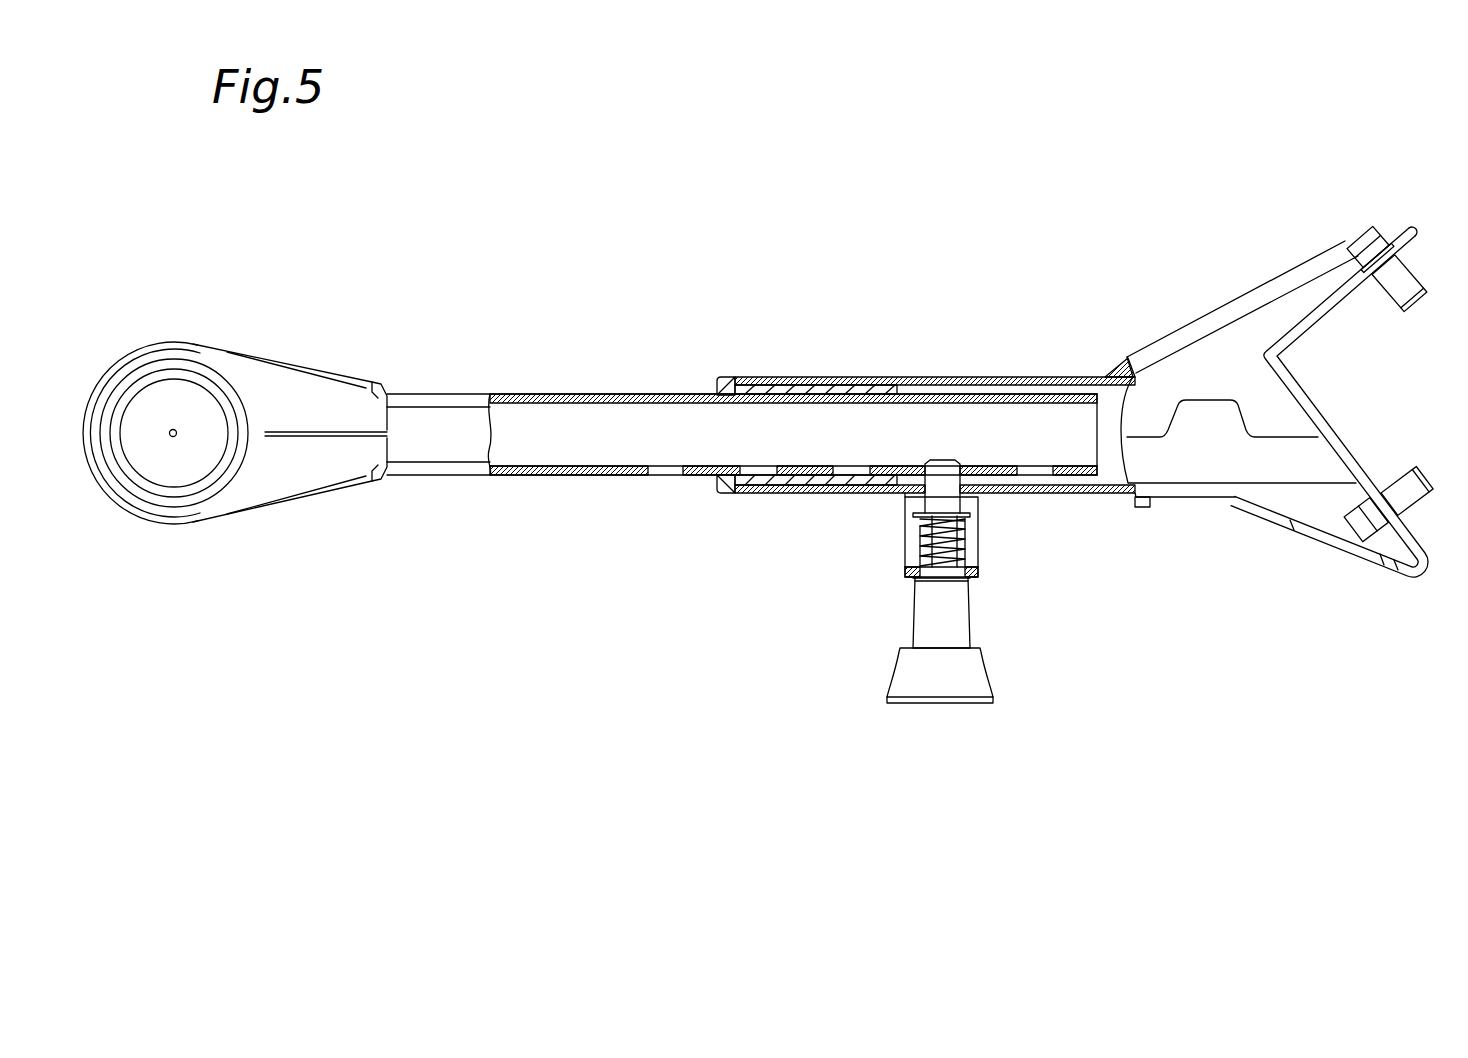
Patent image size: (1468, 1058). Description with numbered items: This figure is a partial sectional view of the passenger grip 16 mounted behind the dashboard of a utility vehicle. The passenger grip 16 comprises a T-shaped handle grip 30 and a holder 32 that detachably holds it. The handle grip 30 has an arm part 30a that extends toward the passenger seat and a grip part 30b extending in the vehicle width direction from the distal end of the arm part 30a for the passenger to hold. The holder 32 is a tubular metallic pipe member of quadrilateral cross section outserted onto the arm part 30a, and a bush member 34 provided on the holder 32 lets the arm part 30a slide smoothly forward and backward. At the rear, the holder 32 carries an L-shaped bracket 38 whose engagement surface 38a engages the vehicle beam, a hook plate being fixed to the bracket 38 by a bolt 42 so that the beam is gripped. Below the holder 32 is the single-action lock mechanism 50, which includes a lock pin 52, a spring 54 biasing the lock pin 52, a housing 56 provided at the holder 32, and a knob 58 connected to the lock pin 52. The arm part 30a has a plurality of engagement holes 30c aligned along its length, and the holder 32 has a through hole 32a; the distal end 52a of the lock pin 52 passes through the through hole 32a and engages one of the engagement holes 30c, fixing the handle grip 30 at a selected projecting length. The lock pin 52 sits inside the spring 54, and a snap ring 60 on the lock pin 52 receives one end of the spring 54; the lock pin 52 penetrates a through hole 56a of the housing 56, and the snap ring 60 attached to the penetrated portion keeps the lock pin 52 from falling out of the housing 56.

The passenger grip 16 is at (580, 200).
The handle grip 30 is at (225, 352).
The arm part 30a is at (432, 393).
The grip part 30b is at (175, 472).
The engagement holes 30c is at (670, 467).
The holder 32 is at (965, 377).
The through hole 32a is at (908, 508).
The bush member 34 is at (718, 382).
The L-shaped bracket 38 is at (1428, 579).
The engagement surface 38a is at (1330, 313).
The bolt 42 is at (1362, 220).
The single-action lock mechanism 50 is at (1122, 677).
The lock pin 52 is at (952, 505).
The distal end 52a is at (935, 460).
The spring 54 is at (972, 572).
The housing 56 is at (905, 575).
The through hole 56a is at (970, 585).
The knob 58 is at (943, 705).
The snap ring 60 is at (963, 548).